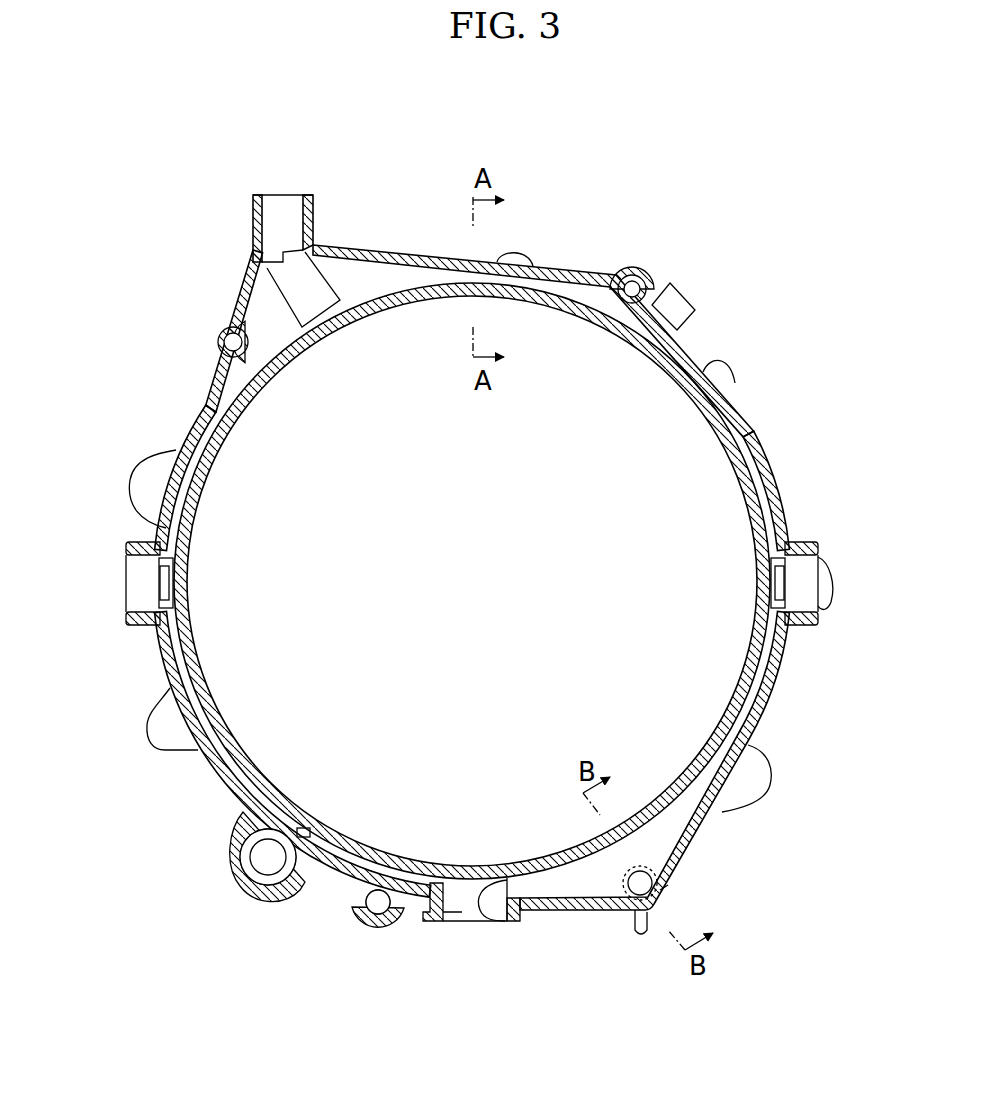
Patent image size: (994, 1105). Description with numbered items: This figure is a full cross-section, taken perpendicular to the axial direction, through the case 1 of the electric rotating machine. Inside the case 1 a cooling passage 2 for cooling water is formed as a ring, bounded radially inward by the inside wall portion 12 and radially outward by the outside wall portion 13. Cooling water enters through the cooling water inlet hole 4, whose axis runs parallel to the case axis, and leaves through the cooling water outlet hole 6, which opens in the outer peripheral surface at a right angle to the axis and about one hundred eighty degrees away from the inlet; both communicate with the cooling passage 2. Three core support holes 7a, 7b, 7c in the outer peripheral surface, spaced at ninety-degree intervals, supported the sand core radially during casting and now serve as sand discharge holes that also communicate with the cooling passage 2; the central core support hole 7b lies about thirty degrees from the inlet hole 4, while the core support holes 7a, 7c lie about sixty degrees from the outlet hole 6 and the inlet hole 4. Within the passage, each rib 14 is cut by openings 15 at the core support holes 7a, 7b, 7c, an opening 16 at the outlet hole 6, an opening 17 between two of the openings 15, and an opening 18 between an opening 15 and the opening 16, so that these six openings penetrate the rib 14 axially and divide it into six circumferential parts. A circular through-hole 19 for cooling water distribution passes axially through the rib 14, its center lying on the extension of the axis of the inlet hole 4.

The case 1 is at (577, 262).
The cooling passage 2 is at (750, 437).
The cooling water inlet hole 4 is at (668, 885).
The cooling water outlet hole 6 is at (263, 216).
The core support hole 7a is at (131, 596).
The core support hole 7b is at (458, 925).
The core support hole 7c is at (800, 607).
The inside wall portion 12 is at (690, 410).
The outside wall portion 13 is at (752, 432).
The rib 14 is at (400, 272).
The opening 15 is at (150, 576).
The opening 16 is at (308, 282).
The opening 17 is at (330, 853).
The opening 18 is at (634, 320).
The through-hole 19 is at (640, 885).